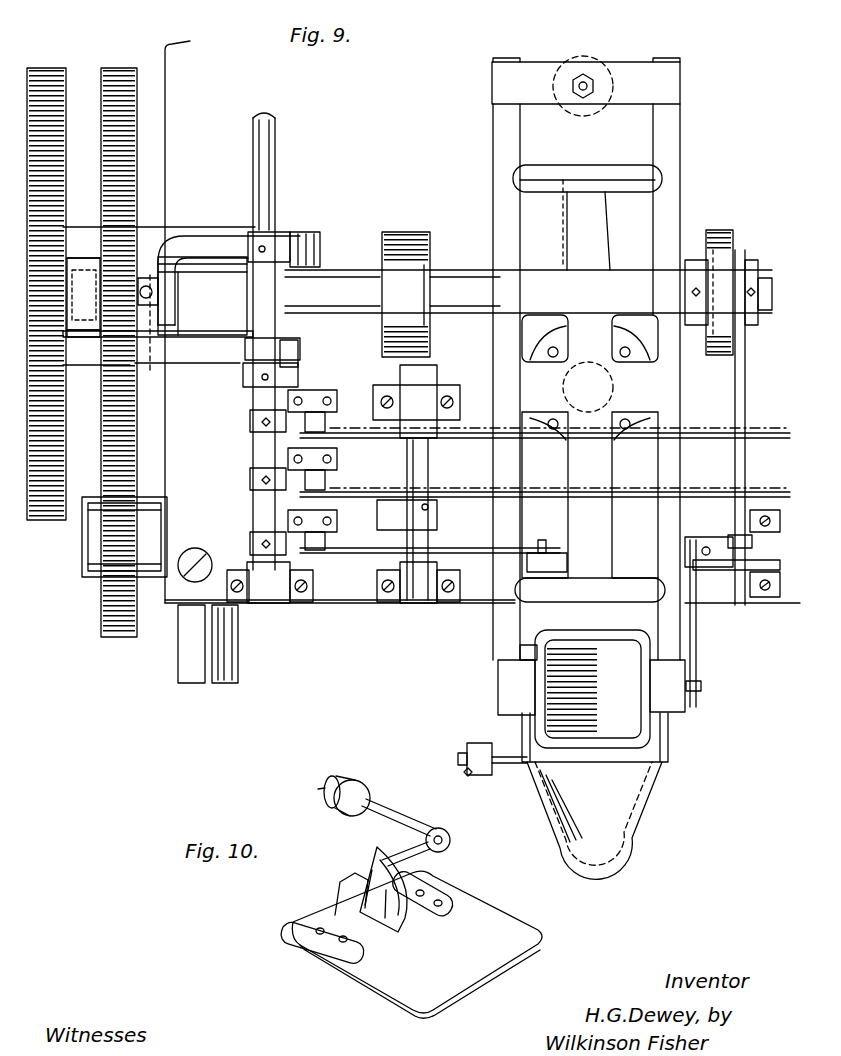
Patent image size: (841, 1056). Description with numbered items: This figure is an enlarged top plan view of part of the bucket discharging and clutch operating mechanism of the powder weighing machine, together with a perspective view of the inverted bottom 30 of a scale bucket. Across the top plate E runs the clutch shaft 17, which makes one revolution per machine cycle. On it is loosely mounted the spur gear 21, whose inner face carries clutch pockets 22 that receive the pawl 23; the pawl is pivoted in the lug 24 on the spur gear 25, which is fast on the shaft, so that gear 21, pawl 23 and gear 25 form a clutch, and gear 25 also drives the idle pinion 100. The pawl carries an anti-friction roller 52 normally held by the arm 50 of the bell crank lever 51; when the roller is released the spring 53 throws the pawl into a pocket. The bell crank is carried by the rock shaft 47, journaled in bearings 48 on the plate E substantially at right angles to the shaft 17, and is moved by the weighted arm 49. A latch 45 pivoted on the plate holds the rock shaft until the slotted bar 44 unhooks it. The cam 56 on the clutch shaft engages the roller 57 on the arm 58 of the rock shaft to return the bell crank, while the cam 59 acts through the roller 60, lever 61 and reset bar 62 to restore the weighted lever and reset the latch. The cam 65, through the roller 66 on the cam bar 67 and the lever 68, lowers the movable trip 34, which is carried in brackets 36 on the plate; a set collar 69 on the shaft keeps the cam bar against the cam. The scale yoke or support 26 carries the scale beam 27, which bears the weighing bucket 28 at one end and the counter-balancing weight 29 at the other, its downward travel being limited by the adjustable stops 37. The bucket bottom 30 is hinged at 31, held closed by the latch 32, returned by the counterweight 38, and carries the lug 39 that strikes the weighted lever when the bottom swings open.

In FIG. 9, the spur gear 21 is at (45, 68).
In FIG. 9, the spur gear 25 is at (110, 68).
In FIG. 9, the clutch pockets 22 is at (66, 102).
In FIG. 9, the lug 24 is at (92, 258).
In FIG. 9, the pawl 23 is at (83, 345).
In FIG. 9, the idle pinion 100 is at (108, 578).
In FIG. 9, the anti-friction roller 52 is at (192, 312).
In FIG. 9, the spring 53 is at (149, 334).
In FIG. 9, the arm 50 is at (176, 250).
In FIG. 9, the bell crank lever 51 is at (280, 234).
In FIG. 9, the arm 49 is at (318, 246).
In FIG. 9, the clutch shaft 17 is at (322, 283).
In FIG. 9, the cam 59 is at (392, 240).
In FIG. 9, the roller 60 is at (422, 335).
In FIG. 9, the rock shaft 47 is at (256, 136).
In FIG. 9, the cam 56 is at (272, 348).
In FIG. 9, the roller 57 is at (300, 352).
In FIG. 9, the arm 58 is at (300, 372).
In FIG. 9, the bar 44 is at (355, 553).
In FIG. 9, the latch 45 is at (292, 524).
In FIG. 9, the reset bar 62 is at (455, 512).
In FIG. 9, the lever 61 is at (388, 512).
In FIG. 9, the counter-balancing weight 29 is at (588, 62).
In FIG. 9, the adjustable stops 37 is at (590, 176).
In FIG. 9, the scale beam 27 is at (660, 204).
In FIG. 9, the scale yoke or support 26 is at (588, 385).
In FIG. 9, the roller 66 is at (735, 252).
In FIG. 9, the cam 65 is at (712, 347).
In FIG. 9, the cam bar 67 is at (737, 393).
In FIG. 9, the set collar 69 is at (752, 273).
In FIG. 9, the brackets 36 is at (736, 536).
In FIG. 9, the lever 68 is at (750, 568).
In FIG. 9, the movable trip 34 is at (697, 636).
In FIG. 9, the latch 32 is at (702, 685).
In FIG. 9, the bottom 30 is at (625, 702).
In FIG. 10, the bottom 30 is at (465, 912).
In FIG. 9, the lug 39 is at (576, 690).
In FIG. 10, the lug 39 is at (375, 866).
In FIG. 9, the hinge 31 is at (522, 652).
In FIG. 9, the weighing bucket 28 is at (647, 733).
In FIG. 9, the counterweight 38 is at (568, 564).
In FIG. 10, the counterweight 38 is at (354, 780).
In FIG. 9, the bearings 48 is at (300, 603).
In FIG. 9, the top plate E is at (343, 603).